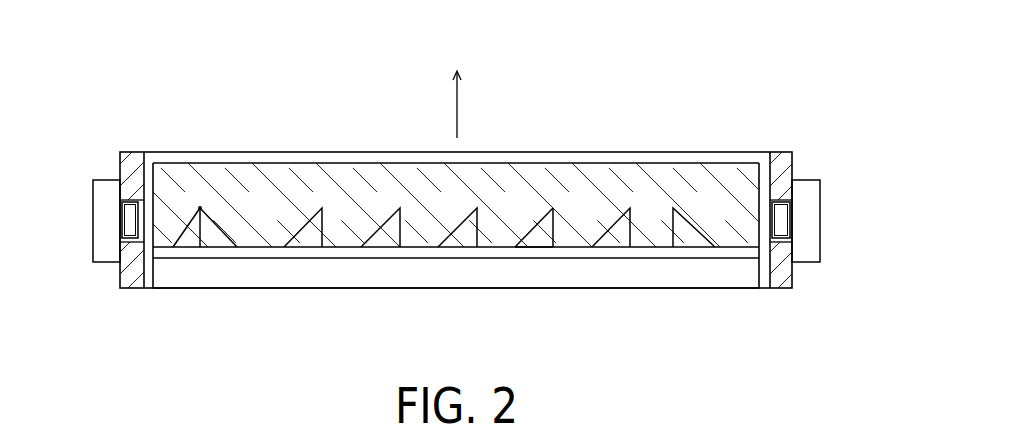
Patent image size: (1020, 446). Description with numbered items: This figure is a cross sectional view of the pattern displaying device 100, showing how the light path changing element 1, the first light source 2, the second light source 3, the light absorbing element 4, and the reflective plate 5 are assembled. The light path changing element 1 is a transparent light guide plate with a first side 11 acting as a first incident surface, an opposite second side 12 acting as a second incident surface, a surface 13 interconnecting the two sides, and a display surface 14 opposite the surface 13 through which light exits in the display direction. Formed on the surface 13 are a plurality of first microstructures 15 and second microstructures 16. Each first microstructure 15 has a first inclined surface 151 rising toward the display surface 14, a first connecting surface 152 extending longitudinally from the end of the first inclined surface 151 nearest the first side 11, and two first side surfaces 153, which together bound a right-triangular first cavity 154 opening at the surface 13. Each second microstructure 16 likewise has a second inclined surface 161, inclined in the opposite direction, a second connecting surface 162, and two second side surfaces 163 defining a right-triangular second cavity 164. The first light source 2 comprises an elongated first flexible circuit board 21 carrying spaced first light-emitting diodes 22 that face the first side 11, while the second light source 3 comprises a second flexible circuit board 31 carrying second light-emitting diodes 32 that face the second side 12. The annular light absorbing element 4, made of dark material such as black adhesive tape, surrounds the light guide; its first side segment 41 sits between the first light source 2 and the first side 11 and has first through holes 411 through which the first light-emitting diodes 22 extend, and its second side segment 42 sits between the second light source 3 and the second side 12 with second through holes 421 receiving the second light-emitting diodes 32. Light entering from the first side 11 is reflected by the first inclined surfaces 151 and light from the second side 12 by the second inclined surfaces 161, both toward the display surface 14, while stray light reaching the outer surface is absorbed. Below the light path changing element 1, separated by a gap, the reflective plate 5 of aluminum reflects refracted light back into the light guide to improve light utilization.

The pattern displaying device 100 is at (123, 49).
The light path changing element 1 is at (448, 220).
The first side 11 is at (760, 185).
The second side 12 is at (152, 187).
The surface 13 is at (417, 249).
The display surface 14 is at (191, 163).
The first microstructure 15 is at (215, 226).
The first inclined surface 151 is at (222, 221).
The first connecting surface 152 is at (197, 231).
The first side surface 153 is at (212, 238).
The first cavity 154 is at (223, 241).
The second microstructure 16 is at (544, 217).
The second inclined surface 161 is at (533, 226).
The second connecting surface 162 is at (555, 226).
The second side surface 163 is at (543, 236).
The second cavity 164 is at (529, 245).
The first light source 2 is at (823, 260).
The first flexible circuit board 21 is at (808, 195).
The first light-emitting diode 22 is at (782, 221).
The second light source 3 is at (87, 272).
The second flexible circuit board 31 is at (100, 200).
The second light-emitting diode 32 is at (128, 223).
The light absorbing element 4 is at (447, 208).
The first side segment 41 is at (780, 212).
The first through hole 411 is at (782, 244).
The second side segment 42 is at (128, 217).
The second through hole 421 is at (131, 272).
The reflective plate 5 is at (368, 268).